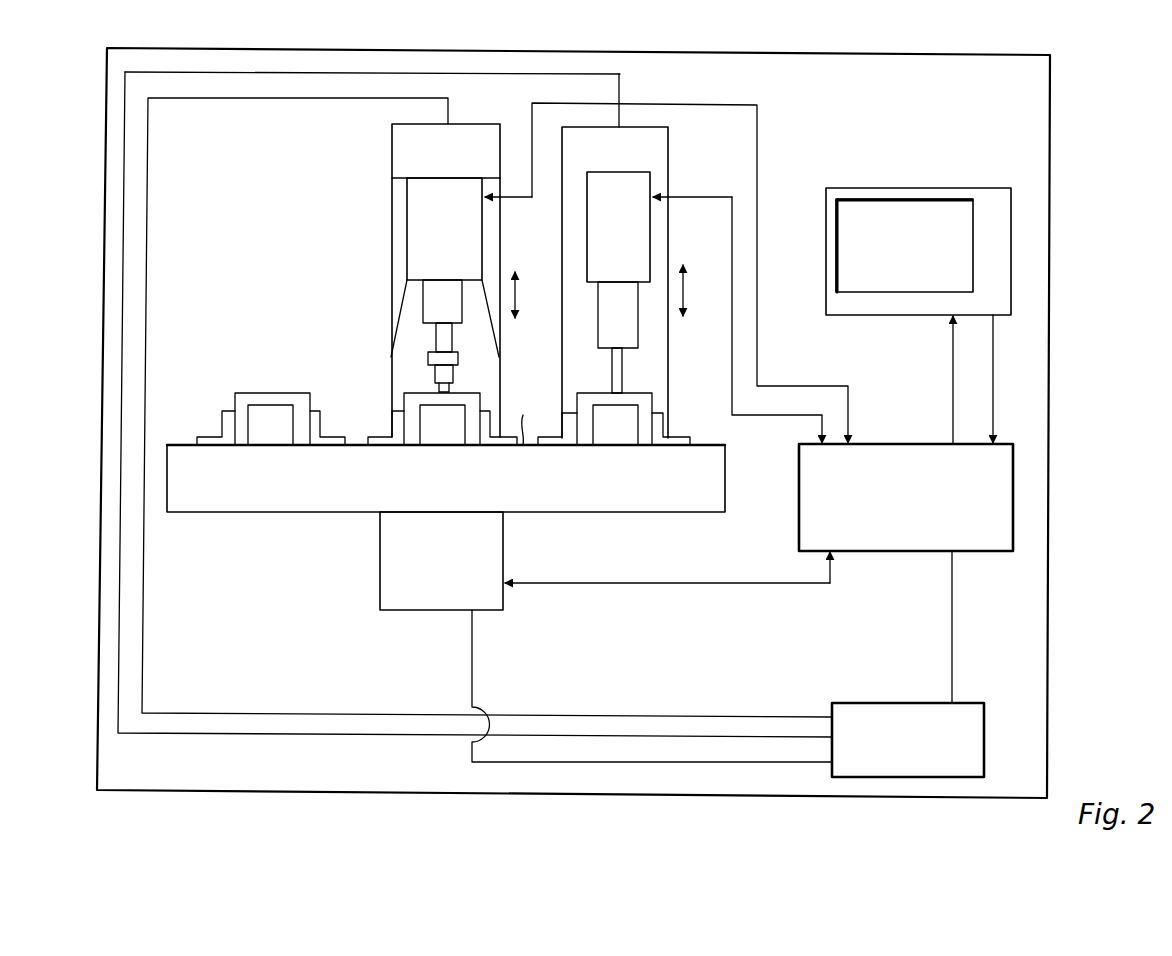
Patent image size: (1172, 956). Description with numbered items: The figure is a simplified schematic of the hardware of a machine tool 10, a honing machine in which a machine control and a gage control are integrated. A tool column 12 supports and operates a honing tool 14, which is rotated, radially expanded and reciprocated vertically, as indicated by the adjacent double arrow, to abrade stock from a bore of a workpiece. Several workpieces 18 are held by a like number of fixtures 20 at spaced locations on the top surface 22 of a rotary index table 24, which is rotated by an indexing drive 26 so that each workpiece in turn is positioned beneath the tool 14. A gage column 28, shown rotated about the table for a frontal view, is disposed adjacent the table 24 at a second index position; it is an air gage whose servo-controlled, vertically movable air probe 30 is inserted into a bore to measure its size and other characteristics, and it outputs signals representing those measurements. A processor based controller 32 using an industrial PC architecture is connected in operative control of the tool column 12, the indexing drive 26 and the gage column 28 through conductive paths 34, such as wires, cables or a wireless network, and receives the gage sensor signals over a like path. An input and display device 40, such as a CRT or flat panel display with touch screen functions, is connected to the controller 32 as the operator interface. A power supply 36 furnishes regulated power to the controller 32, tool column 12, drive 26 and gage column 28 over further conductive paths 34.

The machine tool 10 is at (1051, 114).
The tool column 12 is at (392, 212).
The honing tool 14 is at (441, 390).
The workpieces 18 is at (235, 396).
The fixtures 20 is at (222, 418).
The top surface 22 is at (521, 417).
The rotary index table 24 is at (307, 502).
The indexing drive 26 is at (380, 592).
The gage column 28 is at (672, 150).
The air probe 30 is at (612, 366).
The controller 32 is at (1017, 494).
The conductive paths 34 is at (757, 128).
The power supply 36 is at (975, 701).
The input and display device 40 is at (1012, 257).